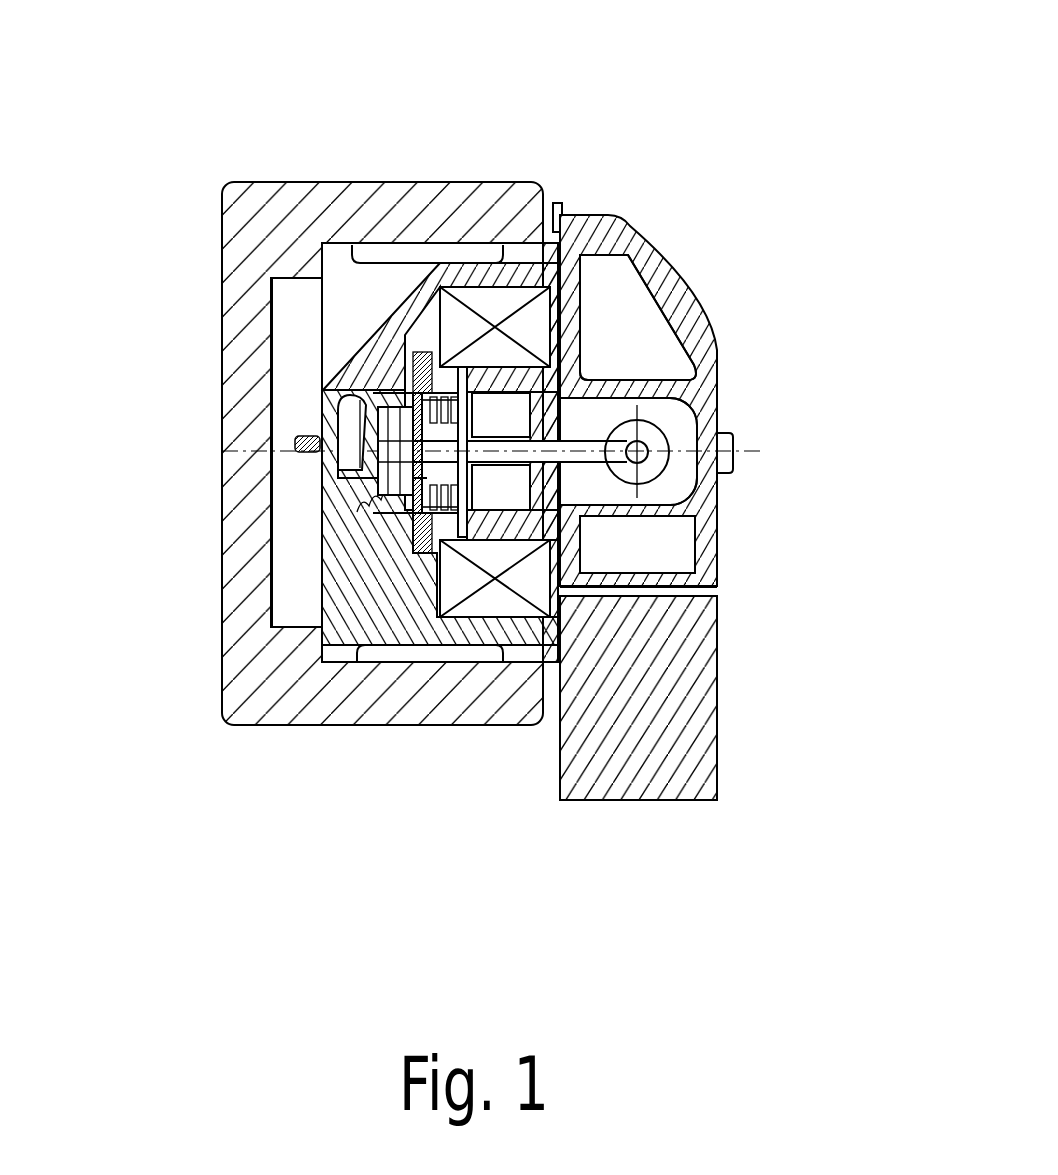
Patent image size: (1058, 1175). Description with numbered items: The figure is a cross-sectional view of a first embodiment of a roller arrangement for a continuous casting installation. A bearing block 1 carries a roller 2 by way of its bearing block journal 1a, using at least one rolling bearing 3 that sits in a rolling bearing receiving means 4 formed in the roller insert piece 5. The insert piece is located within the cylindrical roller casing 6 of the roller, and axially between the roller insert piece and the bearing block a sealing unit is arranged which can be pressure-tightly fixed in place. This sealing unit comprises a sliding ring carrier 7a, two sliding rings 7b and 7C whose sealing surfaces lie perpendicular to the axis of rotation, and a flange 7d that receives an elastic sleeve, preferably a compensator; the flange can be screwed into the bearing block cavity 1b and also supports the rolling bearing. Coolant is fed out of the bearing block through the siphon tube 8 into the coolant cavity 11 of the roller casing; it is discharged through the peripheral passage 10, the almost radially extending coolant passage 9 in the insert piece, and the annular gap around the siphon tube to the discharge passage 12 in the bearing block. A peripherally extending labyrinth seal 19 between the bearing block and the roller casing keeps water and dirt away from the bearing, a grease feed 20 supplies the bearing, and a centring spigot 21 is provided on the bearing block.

The bearing block 1 is at (700, 732).
The bearing block journal 1a is at (603, 388).
The bearing block cavity 1b is at (620, 295).
The roller 2 is at (218, 298).
The rolling bearing 3 is at (546, 322).
The rolling bearing receiving means 4 is at (493, 318).
The roller insert piece 5 is at (450, 280).
The roller casing 6 is at (463, 193).
The sliding ring carrier 7a is at (385, 480).
The sliding ring 7b is at (390, 495).
The sliding ring 7C is at (418, 455).
The flange 7d is at (430, 520).
The siphon tube 8 is at (640, 449).
The coolant passage in the insert piece 9 is at (352, 421).
The peripheral passage 10 is at (393, 255).
The coolant cavity 11 is at (298, 298).
The discharge passage 12 is at (680, 487).
The labyrinth seal 19 is at (558, 203).
The grease feed for bearing 20 is at (705, 593).
The centring spigot 21 is at (737, 462).